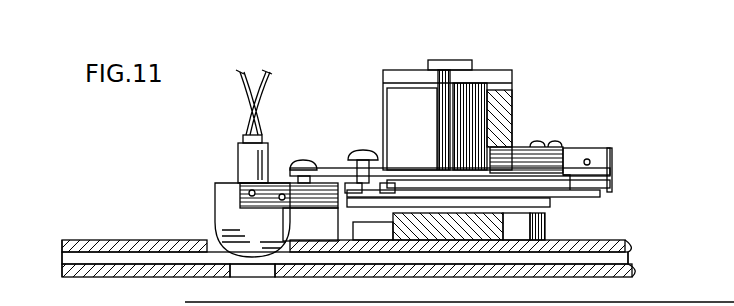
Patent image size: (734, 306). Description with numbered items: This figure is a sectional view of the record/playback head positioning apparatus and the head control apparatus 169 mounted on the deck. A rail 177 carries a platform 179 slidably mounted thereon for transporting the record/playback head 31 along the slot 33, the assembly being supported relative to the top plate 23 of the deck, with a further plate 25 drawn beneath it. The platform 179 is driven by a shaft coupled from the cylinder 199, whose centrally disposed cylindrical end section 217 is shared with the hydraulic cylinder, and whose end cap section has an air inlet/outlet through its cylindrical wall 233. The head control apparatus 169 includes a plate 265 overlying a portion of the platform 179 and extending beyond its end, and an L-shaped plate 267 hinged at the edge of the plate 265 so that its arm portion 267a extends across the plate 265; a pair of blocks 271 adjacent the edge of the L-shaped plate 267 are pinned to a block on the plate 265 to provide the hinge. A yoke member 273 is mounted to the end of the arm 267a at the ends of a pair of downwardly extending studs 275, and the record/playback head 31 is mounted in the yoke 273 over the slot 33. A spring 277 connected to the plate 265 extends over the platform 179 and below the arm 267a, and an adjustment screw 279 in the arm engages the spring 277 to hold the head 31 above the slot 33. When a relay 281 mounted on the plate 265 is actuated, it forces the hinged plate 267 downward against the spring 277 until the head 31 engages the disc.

The top plate 23 is at (613, 247).
The lower base plate 25 is at (632, 280).
The record/playback head 31 is at (216, 218).
The slot 33 is at (209, 240).
The head control apparatus 169 is at (518, 67).
The rail 177 is at (473, 233).
The platform 179 is at (555, 206).
The cylinder 199 is at (352, 286).
The cylindrical end section 217 is at (205, 302).
The cylindrical wall 233 is at (377, 302).
The plate 265 is at (613, 197).
The L-shaped plate 267 is at (543, 170).
The arm portion 267a is at (293, 165).
The blocks 271 is at (613, 177).
The yoke member 273 is at (238, 180).
The studs 275 is at (310, 224).
The spring 277 is at (333, 170).
The adjustment screw 279 is at (380, 158).
The relay 281 is at (400, 97).